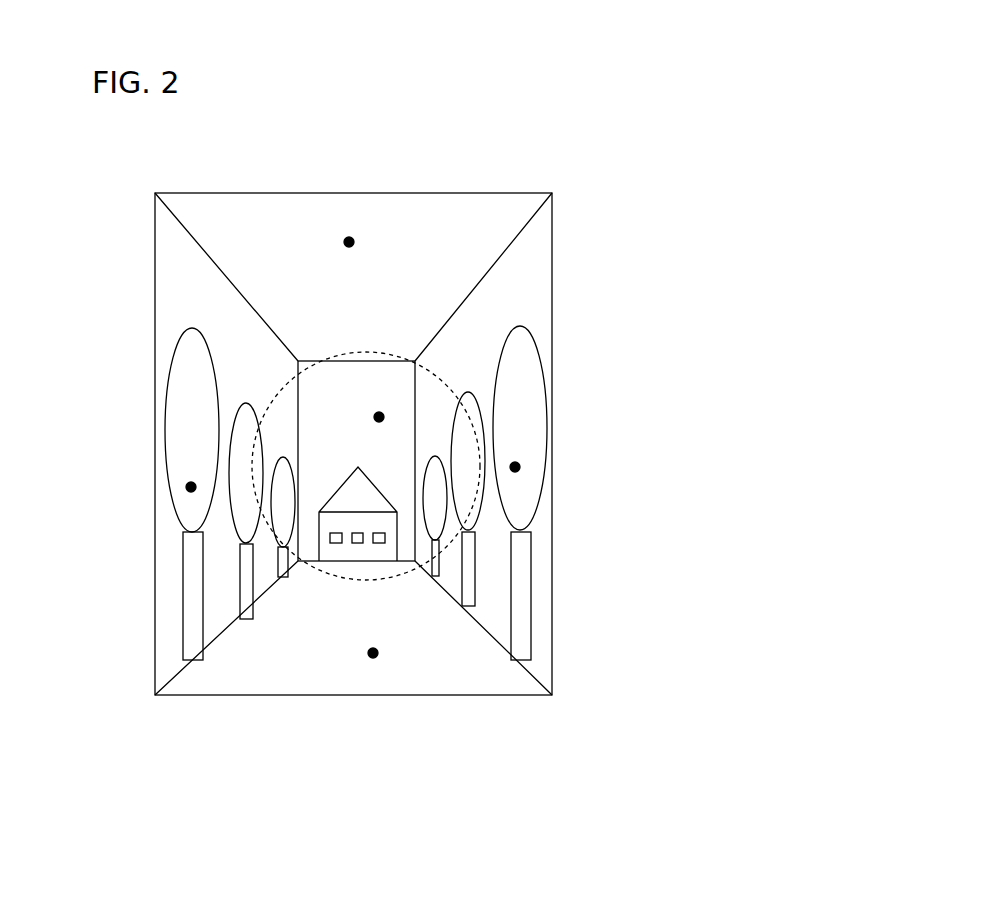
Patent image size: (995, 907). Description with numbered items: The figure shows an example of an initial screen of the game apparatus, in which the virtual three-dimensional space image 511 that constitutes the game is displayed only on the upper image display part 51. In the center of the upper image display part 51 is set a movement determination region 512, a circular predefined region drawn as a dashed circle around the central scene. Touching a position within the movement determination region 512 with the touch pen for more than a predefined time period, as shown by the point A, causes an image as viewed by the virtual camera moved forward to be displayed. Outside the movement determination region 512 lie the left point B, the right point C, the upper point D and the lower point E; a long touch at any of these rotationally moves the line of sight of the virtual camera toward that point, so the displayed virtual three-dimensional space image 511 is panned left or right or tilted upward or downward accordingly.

The upper image display part 51 is at (488, 193).
The virtual 3D space image 511 is at (537, 328).
The movement determination region 512 is at (376, 352).
The position within the movement determination region A is at (386, 411).
The left point B is at (184, 487).
The right point C is at (522, 467).
The upper point D is at (351, 234).
The lower point E is at (371, 661).